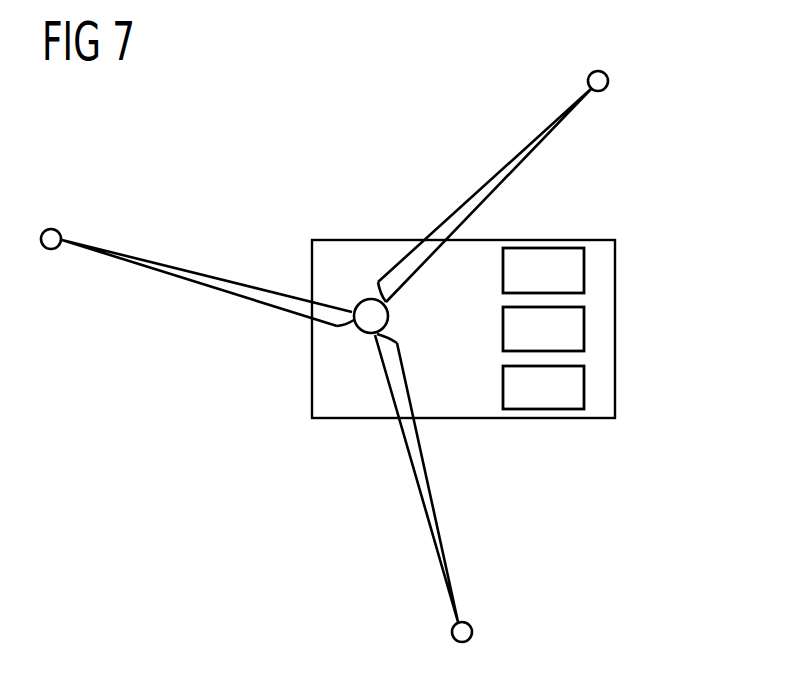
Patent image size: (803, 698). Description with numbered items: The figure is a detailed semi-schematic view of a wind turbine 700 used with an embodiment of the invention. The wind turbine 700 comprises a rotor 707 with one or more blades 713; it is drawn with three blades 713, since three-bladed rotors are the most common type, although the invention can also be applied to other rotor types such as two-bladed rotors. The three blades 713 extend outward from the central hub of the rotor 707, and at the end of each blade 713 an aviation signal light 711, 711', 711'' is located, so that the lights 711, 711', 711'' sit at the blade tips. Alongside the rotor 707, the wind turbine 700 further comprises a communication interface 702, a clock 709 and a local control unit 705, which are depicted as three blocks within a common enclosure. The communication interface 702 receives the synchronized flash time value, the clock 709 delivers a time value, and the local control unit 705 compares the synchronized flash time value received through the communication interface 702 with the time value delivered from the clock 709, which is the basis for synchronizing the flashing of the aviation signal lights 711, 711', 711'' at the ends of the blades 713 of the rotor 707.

The wind turbine 700 is at (684, 454).
The communication interface 702 is at (502, 270).
The local control unit 705 is at (502, 328).
The rotor 707 is at (246, 150).
The clock 709 is at (502, 385).
The aviation signal light 711 is at (62, 202).
The aviation signal light 711' is at (509, 626).
The aviation signal light 711'' is at (551, 76).
The blade 713 is at (183, 270).